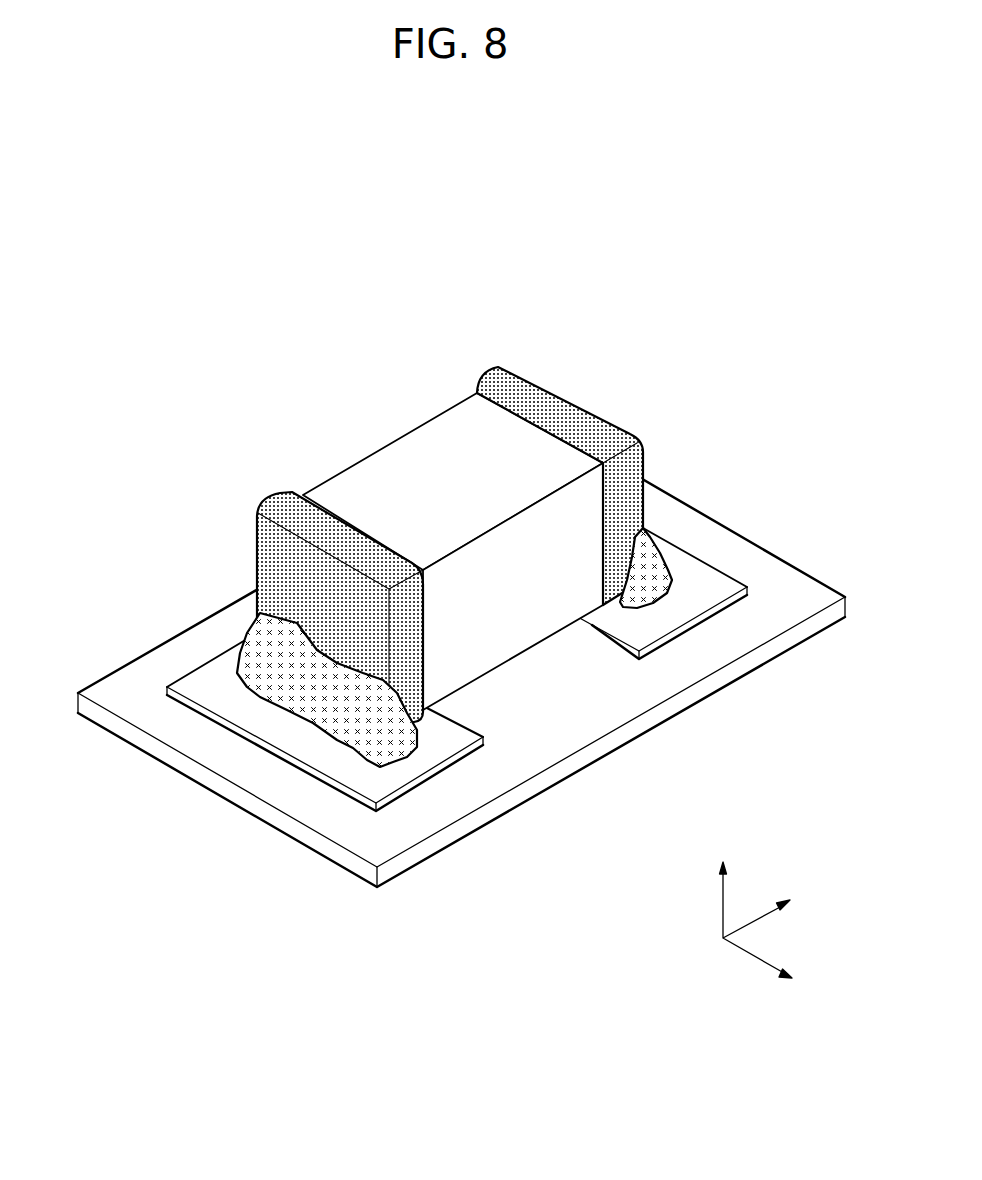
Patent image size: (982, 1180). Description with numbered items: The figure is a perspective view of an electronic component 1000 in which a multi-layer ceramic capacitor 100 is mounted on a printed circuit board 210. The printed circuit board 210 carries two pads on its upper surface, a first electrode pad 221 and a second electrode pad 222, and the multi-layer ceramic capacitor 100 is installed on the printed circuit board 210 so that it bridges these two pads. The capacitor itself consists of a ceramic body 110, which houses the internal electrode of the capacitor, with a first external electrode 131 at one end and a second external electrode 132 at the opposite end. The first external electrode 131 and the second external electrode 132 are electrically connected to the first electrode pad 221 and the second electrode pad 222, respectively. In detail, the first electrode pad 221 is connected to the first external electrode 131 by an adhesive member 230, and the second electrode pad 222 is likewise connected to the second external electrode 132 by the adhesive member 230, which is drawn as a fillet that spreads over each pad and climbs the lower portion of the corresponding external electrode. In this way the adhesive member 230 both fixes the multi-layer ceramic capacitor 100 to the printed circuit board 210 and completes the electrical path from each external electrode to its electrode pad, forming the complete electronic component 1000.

The electronic component 1000 is at (786, 286).
The multi-layer ceramic capacitor 100 is at (443, 516).
The ceramic body 110 is at (368, 475).
The first external electrode 131 is at (283, 495).
The second external electrode 132 is at (503, 367).
The printed circuit board 210 is at (582, 718).
The first electrode pad 221 is at (428, 757).
The second electrode pad 222 is at (683, 608).
The adhesive member 230 is at (300, 685).